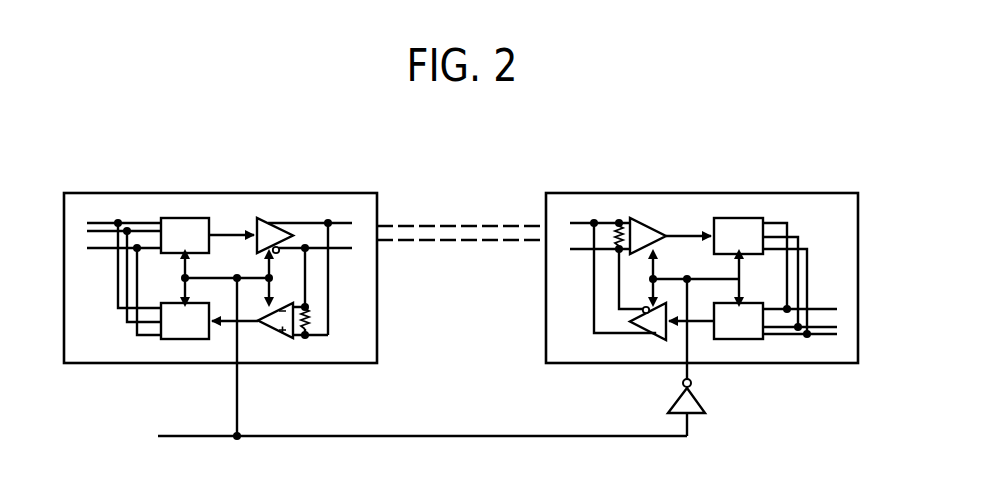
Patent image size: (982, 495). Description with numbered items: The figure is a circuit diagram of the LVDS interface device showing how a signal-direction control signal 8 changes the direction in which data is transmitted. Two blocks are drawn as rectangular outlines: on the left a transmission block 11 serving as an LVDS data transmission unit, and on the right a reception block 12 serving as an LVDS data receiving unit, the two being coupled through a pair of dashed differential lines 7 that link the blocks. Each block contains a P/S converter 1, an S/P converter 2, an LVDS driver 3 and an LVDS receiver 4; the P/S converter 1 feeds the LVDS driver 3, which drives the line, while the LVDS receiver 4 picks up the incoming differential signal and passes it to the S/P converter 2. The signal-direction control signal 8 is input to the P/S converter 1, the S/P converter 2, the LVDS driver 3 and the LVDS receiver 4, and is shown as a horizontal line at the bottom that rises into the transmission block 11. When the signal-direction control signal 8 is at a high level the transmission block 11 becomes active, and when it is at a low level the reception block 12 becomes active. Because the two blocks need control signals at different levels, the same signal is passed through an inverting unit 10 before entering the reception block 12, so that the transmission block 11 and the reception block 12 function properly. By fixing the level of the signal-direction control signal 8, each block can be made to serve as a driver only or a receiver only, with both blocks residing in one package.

The P/S converter 1 is at (173, 218).
The S/P converter 2 is at (193, 339).
The LVDS driver 3 is at (258, 220).
The LVDS receiver 4 is at (266, 338).
The differential transmission line 7 is at (345, 223).
The signal-direction control signal 8 is at (414, 362).
The inverting unit 10 is at (695, 414).
The transmission block 11 is at (335, 193).
The reception block 12 is at (828, 193).